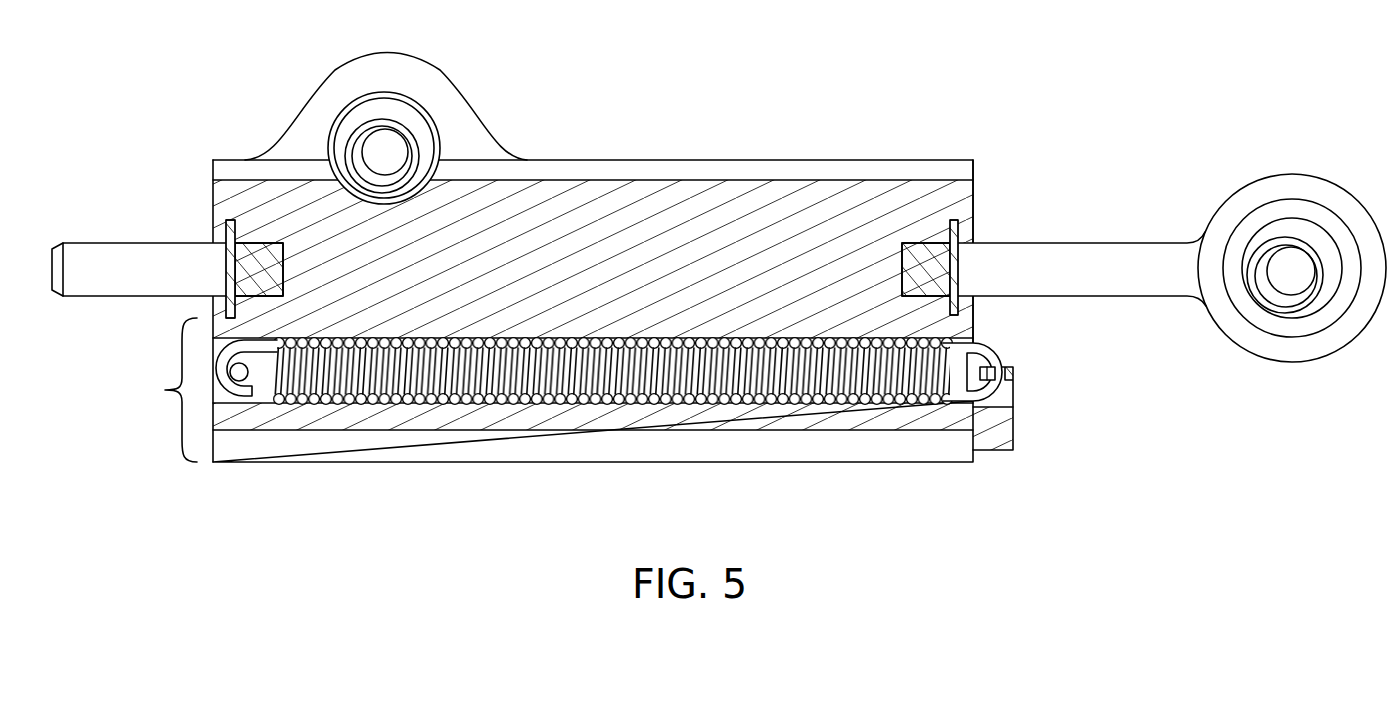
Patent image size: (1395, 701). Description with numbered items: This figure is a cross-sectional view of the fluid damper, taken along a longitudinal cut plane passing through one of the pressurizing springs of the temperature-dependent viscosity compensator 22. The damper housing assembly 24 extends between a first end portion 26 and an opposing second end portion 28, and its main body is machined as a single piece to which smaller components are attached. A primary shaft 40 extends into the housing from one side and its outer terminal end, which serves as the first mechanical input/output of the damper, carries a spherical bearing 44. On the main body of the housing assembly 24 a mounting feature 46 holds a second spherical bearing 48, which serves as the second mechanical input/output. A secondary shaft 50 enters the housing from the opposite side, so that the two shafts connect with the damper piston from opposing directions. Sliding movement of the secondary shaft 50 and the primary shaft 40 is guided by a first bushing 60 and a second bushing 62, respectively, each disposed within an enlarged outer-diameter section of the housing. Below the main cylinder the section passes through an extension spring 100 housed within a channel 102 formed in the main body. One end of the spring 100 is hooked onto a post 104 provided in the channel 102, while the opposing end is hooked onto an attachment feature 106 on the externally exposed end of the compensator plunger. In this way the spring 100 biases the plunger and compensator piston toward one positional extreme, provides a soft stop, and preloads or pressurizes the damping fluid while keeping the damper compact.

The temperature-dependent viscosity compensator 22 is at (163, 390).
The housing assembly 24 is at (687, 148).
The first end portion 26 is at (217, 160).
The second end portion 28 is at (957, 160).
The primary shaft 40 is at (1087, 243).
The spherical bearing 44 is at (1297, 228).
The mounting feature 46 is at (305, 88).
The second spherical bearing 48 is at (413, 123).
The secondary shaft 50 is at (135, 243).
The first bushing 60 is at (257, 253).
The second bushing 62 is at (929, 252).
The extension spring 100 is at (592, 360).
The channel 102 is at (725, 336).
The post 104 is at (238, 378).
The attachment feature 106 is at (1013, 437).